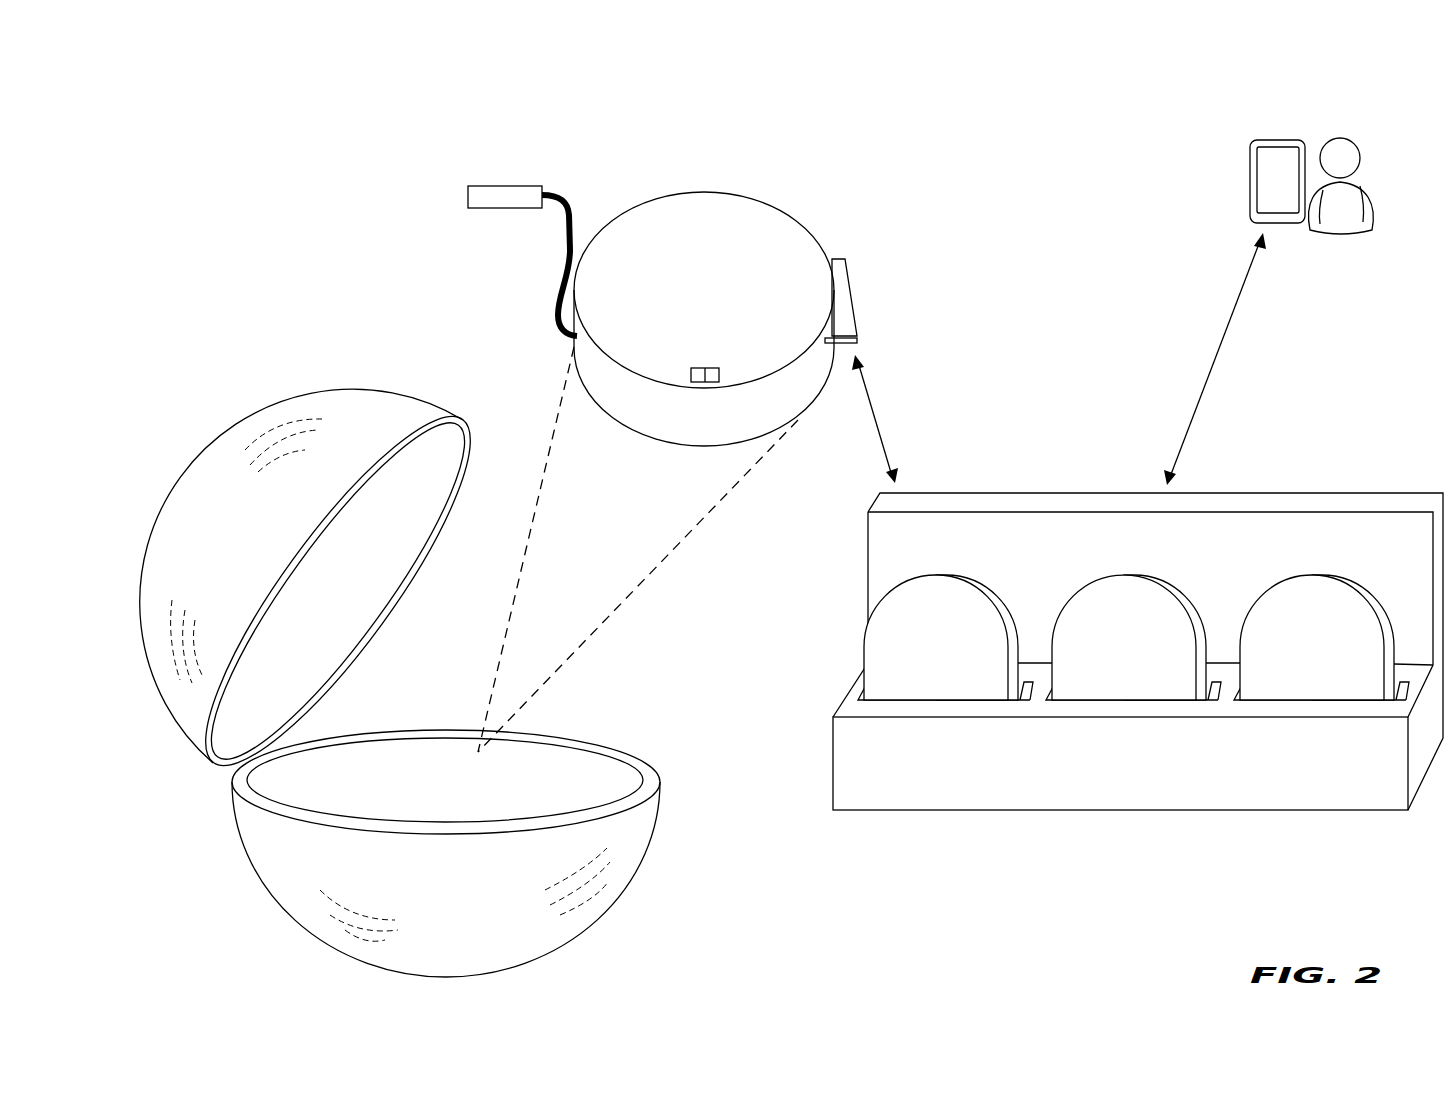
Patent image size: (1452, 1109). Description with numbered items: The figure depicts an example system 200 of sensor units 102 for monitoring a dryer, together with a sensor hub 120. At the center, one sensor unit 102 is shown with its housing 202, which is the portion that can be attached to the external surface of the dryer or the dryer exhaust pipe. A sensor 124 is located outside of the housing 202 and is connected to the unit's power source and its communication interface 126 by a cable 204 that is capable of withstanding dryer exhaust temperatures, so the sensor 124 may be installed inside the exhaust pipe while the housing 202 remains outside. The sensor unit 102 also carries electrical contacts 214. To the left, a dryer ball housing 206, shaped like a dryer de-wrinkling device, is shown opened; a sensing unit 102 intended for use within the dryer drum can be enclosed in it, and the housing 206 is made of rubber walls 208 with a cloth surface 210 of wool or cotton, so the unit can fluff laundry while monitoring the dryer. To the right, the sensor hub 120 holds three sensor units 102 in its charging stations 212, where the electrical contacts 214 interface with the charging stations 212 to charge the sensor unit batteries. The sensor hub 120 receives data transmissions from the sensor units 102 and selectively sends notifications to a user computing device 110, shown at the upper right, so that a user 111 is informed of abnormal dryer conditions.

The system 200 is at (233, 155).
The sensor unit 102 is at (723, 281).
The housing 202 is at (657, 203).
The sensor 124 is at (497, 185).
The cable 204 is at (553, 300).
The communication interface 126 is at (855, 300).
The electrical contacts 214 is at (707, 387).
The dryer ball housing 206 is at (372, 366).
The cloth surface 210 is at (200, 497).
The rubber walls 208 is at (460, 427).
The sensor hub 120 is at (990, 492).
The charging station 212 is at (930, 712).
The user computing device 110 is at (1257, 148).
The user 111 is at (1350, 147).